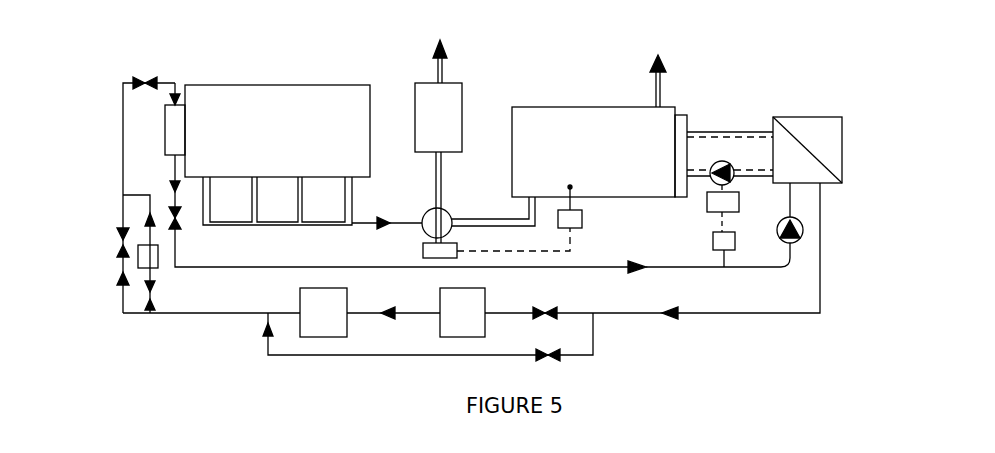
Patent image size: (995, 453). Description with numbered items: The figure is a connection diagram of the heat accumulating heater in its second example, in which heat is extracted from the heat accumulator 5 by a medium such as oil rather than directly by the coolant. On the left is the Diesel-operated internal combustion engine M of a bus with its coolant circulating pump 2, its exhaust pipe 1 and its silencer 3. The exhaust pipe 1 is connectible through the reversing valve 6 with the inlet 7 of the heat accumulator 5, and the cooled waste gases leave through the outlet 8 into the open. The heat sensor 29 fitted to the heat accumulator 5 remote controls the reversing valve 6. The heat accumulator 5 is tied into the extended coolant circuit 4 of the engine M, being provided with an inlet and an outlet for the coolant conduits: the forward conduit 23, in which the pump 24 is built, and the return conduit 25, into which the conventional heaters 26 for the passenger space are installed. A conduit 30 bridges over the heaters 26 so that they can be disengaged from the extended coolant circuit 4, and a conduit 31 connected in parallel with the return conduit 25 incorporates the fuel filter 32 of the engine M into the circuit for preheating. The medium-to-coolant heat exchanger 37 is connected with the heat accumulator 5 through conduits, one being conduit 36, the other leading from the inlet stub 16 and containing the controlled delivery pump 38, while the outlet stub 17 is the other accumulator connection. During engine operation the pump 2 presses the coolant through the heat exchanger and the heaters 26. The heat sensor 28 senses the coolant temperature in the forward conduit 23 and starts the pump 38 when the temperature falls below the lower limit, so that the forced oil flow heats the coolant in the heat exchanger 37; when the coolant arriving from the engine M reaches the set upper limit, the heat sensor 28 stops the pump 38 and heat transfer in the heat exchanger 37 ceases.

The internal combustion engine M is at (253, 97).
The exhaust pipe 1 is at (365, 222).
The coolant circulating pump 2 is at (172, 131).
The silencer 3 is at (445, 115).
The extended coolant circuit 4 is at (122, 101).
The heat accumulator 5 is at (548, 108).
The reversing valve 6 is at (450, 212).
The inlet 7 is at (528, 204).
The outlet 8 is at (654, 102).
The inlet stub 16 is at (690, 175).
The outlet stub 17 is at (702, 131).
The forward conduit 23 is at (600, 268).
The pump 24 is at (786, 236).
The return conduit 25 is at (712, 315).
The heaters 26 is at (304, 314).
The heat sensor 28 is at (712, 241).
The heat sensor 29 is at (583, 218).
The bridging conduit 30 is at (371, 357).
The parallel conduit 31 is at (142, 194).
The fuel filter 32 is at (150, 258).
The conduit 36 is at (770, 130).
The heat exchanger 37 is at (808, 116).
The controlled delivery pump 38 is at (717, 161).